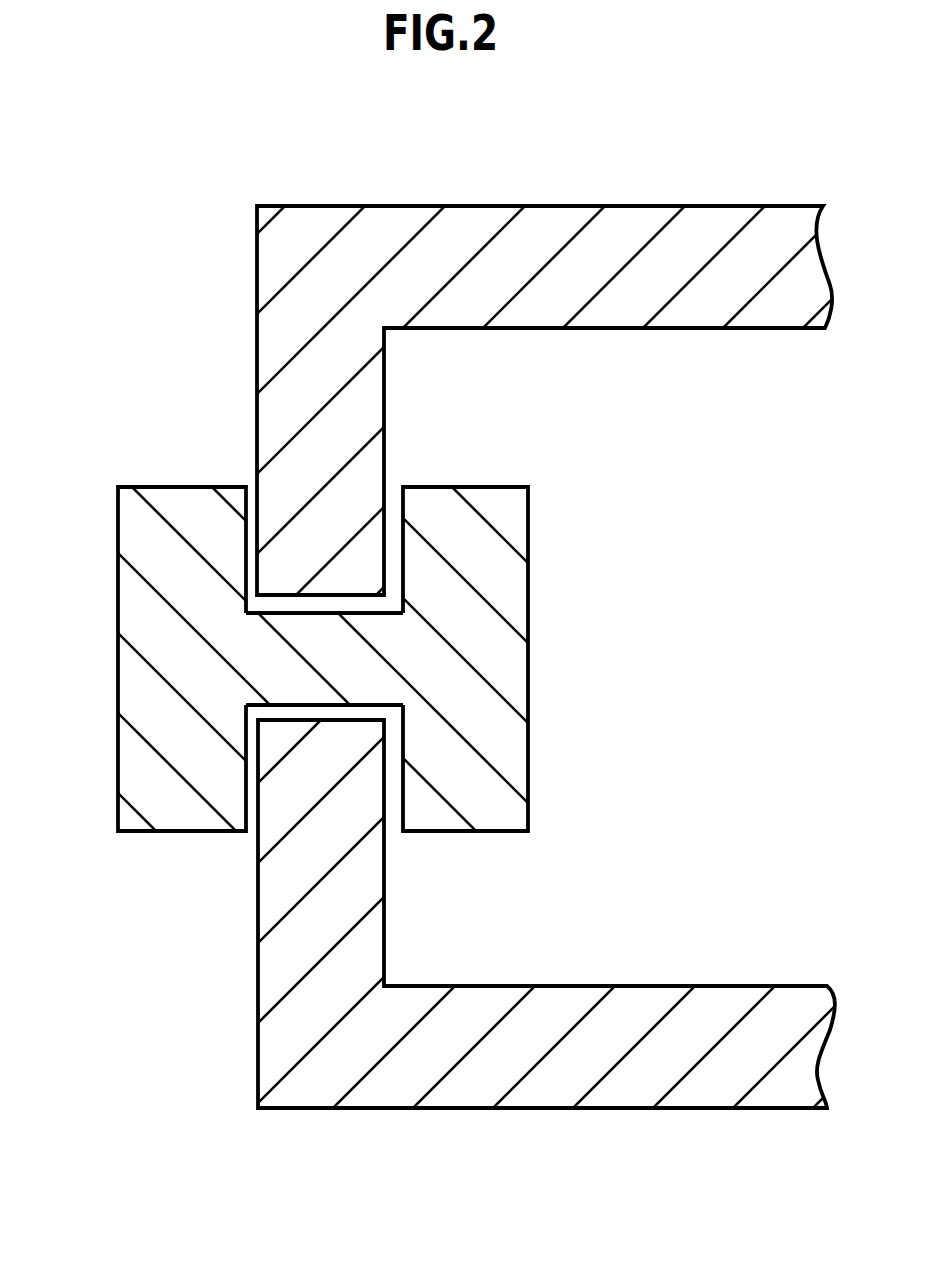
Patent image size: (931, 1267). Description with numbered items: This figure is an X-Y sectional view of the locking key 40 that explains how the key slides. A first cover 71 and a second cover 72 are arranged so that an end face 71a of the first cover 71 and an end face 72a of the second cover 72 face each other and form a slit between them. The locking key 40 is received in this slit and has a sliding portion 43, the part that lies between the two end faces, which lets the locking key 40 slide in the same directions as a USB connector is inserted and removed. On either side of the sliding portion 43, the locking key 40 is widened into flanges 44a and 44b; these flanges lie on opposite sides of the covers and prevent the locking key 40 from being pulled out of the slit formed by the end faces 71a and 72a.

The first cover 71 is at (480, 240).
The end face of first cover 71a is at (322, 595).
The second cover 72 is at (483, 1083).
The end face of second cover 72a is at (322, 720).
The locking key 40 is at (465, 633).
The sliding portion 43 is at (335, 645).
The flange 44a is at (163, 783).
The flange 44b is at (470, 785).